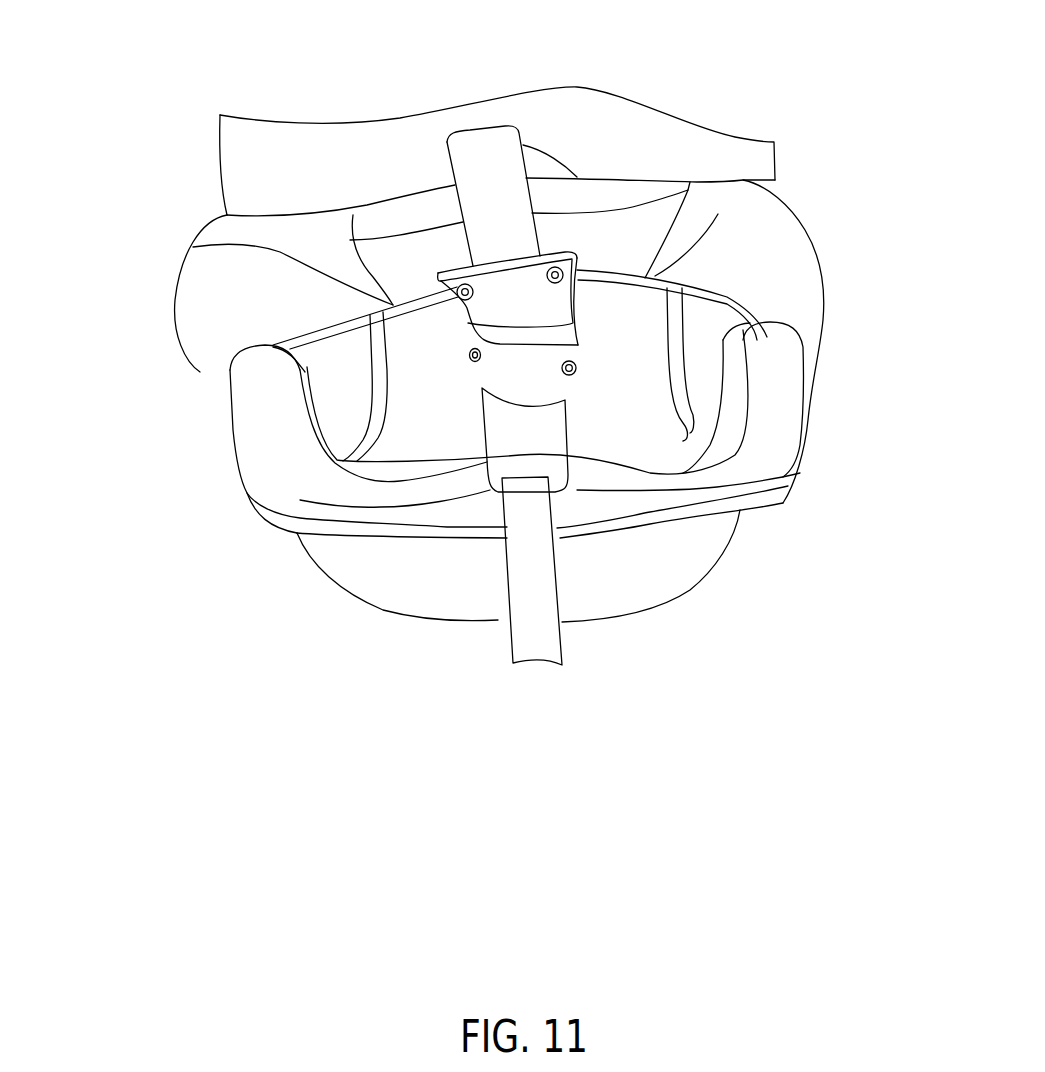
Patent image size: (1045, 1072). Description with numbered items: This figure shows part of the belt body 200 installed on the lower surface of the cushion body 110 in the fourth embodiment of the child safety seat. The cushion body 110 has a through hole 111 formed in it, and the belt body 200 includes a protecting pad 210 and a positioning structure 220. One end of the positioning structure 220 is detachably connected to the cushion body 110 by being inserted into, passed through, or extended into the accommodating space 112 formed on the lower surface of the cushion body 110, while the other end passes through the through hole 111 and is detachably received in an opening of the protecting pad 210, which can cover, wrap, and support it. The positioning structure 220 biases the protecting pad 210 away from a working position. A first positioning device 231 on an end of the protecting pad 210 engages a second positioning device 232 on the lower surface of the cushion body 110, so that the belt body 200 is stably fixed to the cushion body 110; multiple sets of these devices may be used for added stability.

The belt body 200 is at (440, 129).
The cushion body 110 is at (230, 292).
The through hole 111 is at (505, 327).
The accommodating space 112 is at (528, 437).
The protecting pad 210 is at (530, 310).
The positioning structure 220 is at (498, 205).
The first positioning device 231 is at (564, 271).
The second positioning device 232 is at (577, 367).